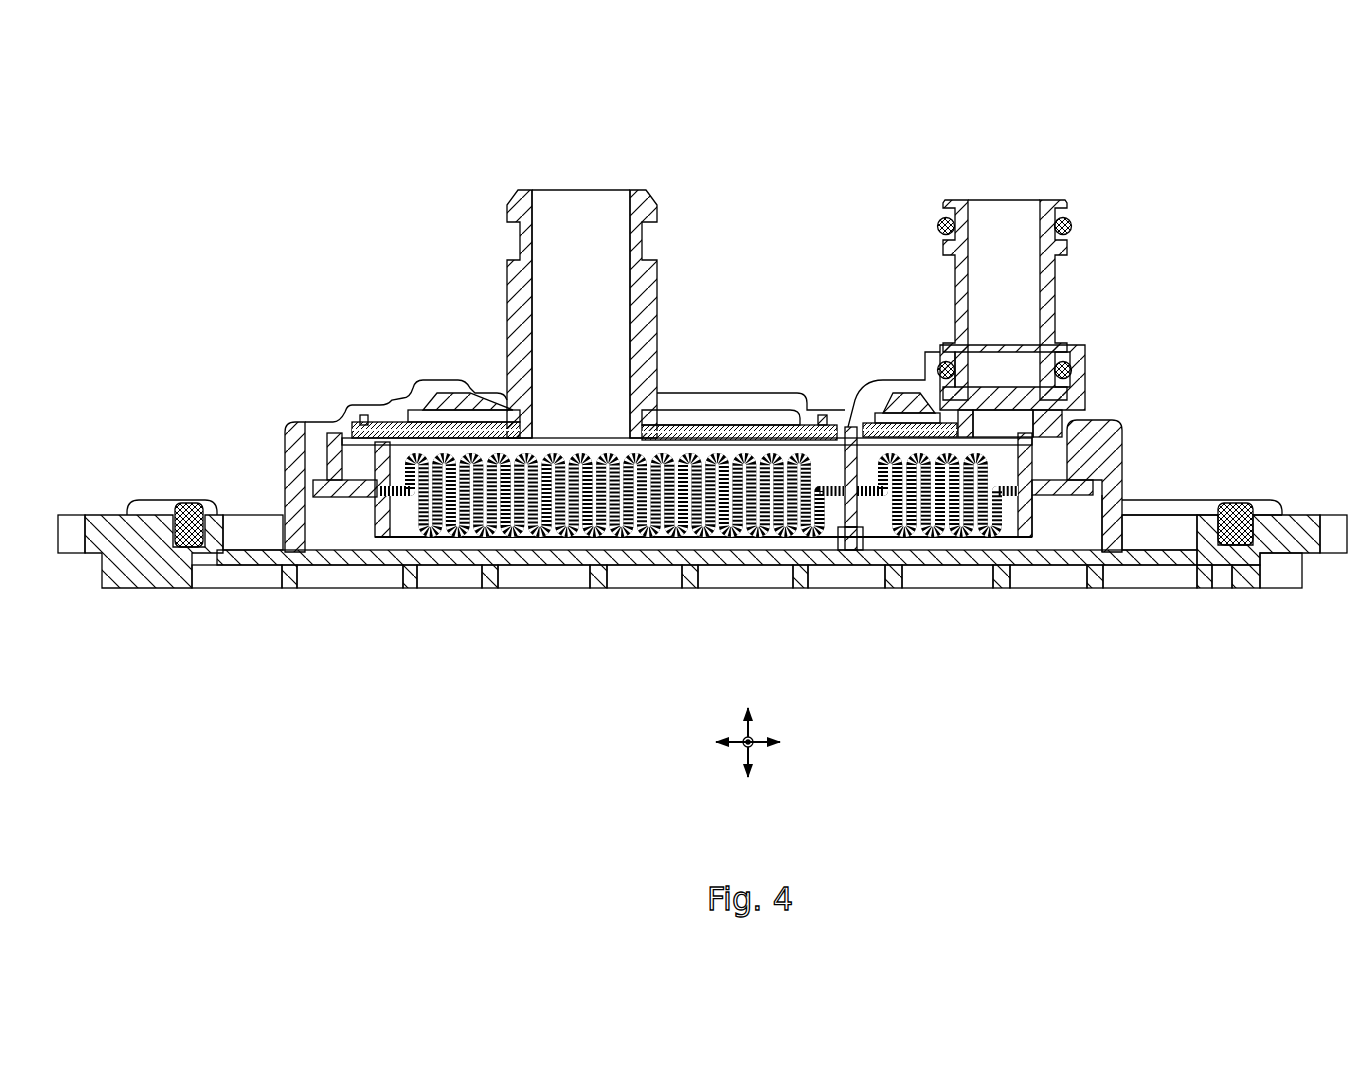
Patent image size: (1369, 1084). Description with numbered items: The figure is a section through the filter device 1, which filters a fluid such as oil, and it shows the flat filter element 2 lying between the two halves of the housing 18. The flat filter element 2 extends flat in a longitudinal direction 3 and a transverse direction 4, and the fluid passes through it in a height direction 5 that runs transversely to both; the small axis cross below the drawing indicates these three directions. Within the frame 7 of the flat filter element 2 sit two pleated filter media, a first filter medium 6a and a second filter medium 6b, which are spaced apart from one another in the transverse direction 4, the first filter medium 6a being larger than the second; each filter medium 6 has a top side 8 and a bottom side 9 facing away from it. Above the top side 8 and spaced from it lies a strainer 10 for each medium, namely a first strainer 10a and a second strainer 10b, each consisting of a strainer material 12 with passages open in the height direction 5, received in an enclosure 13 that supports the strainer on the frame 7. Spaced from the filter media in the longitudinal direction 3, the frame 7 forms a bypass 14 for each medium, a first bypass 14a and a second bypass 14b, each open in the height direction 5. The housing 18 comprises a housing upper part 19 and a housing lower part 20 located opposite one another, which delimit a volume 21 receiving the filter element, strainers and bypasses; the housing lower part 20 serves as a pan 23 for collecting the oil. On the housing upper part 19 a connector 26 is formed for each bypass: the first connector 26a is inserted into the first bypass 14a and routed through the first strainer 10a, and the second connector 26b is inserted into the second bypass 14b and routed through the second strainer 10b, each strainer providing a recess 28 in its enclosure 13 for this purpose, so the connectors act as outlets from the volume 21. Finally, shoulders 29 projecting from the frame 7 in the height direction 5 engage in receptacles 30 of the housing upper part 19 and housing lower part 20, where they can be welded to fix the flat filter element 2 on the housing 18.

The filter device 1 is at (1191, 222).
The flat filter element 2 is at (345, 500).
The longitudinal direction 3 is at (740, 748).
The transverse direction 4 is at (782, 745).
The height direction 5 is at (754, 720).
The filter medium 6 is at (699, 551).
The first filter medium 6a is at (518, 537).
The second filter medium 6b is at (934, 540).
The frame 7 is at (321, 460).
The top side 8 is at (588, 455).
The bottom side 9 is at (629, 539).
The strainer 10 is at (667, 364).
The first strainer 10a is at (393, 419).
The second strainer 10b is at (862, 400).
The strainer material 12 is at (738, 428).
The enclosure 13 is at (696, 428).
The bypass 14 is at (851, 408).
The first bypass 14a is at (566, 432).
The second bypass 14b is at (1021, 447).
The housing 18 is at (1140, 482).
The housing upper part 19 is at (283, 485).
The housing lower part 20 is at (714, 589).
The volume 21 is at (1067, 523).
The pan 23 is at (232, 568).
The connector 26 is at (840, 314).
The first connector 26a is at (660, 268).
The second connector 26b is at (1083, 380).
The recess 28 is at (520, 425).
The shoulder 29 is at (325, 432).
The receptacle 30 is at (303, 442).